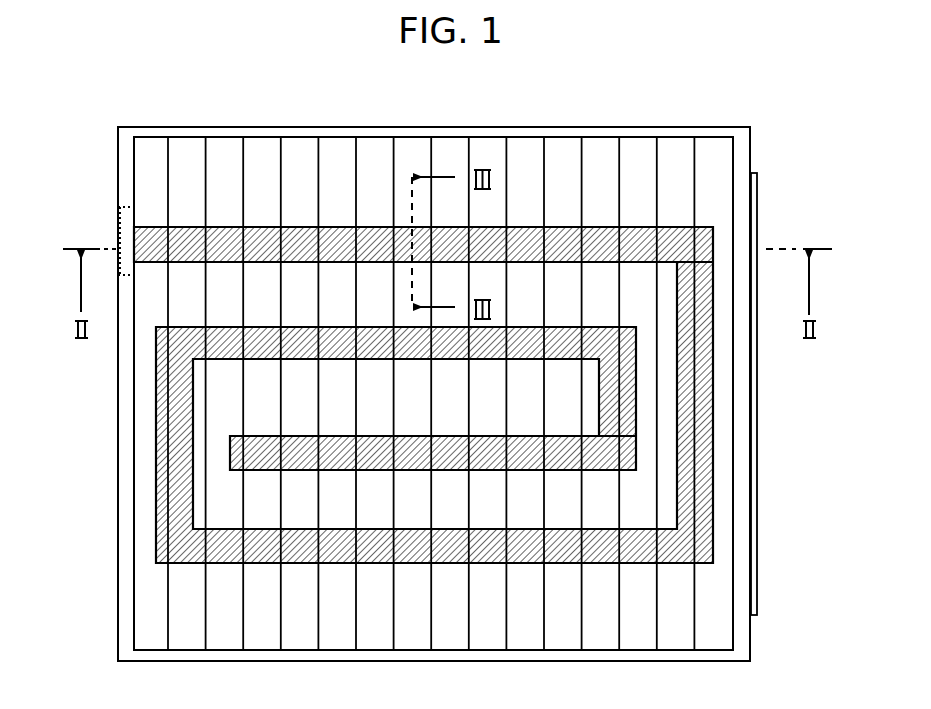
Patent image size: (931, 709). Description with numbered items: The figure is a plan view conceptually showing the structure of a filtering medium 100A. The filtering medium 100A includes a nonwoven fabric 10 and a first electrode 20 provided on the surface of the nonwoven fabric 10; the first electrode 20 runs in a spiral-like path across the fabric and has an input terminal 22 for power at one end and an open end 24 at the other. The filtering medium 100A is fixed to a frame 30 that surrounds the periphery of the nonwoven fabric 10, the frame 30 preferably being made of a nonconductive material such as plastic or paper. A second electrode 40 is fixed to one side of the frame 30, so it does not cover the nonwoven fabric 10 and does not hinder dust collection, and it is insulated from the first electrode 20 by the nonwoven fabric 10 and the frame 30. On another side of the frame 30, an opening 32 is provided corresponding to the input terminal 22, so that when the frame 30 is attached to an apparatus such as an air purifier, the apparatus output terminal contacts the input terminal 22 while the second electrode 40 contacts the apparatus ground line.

The filtering medium 100A is at (705, 105).
The nonwoven fabric 10 is at (150, 602).
The first electrode 20 is at (438, 356).
The input terminal 22 is at (150, 242).
The open end 24 is at (258, 462).
The frame 30 is at (742, 155).
The opening 32 is at (128, 223).
The second electrode 40 is at (752, 553).